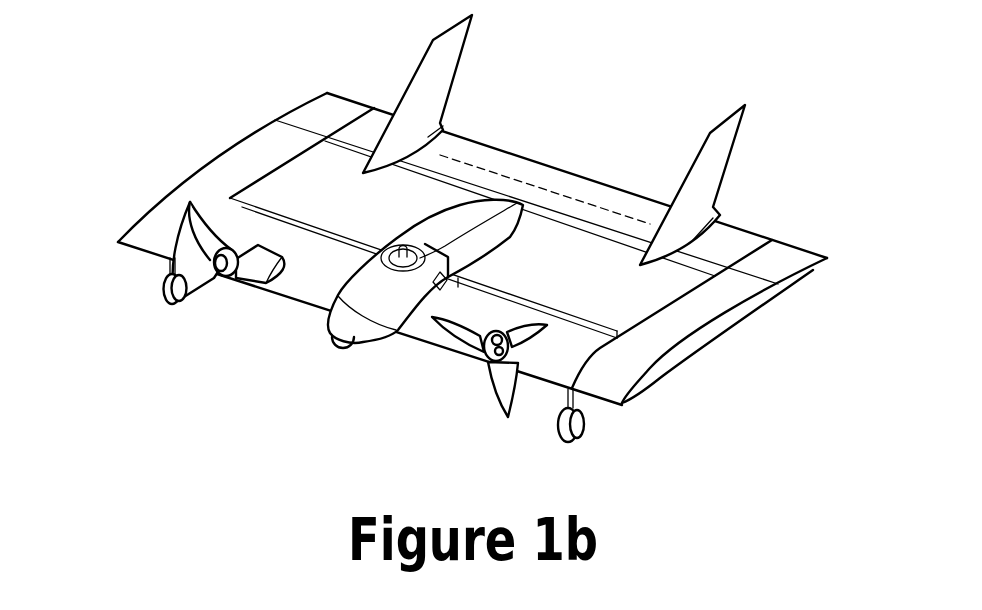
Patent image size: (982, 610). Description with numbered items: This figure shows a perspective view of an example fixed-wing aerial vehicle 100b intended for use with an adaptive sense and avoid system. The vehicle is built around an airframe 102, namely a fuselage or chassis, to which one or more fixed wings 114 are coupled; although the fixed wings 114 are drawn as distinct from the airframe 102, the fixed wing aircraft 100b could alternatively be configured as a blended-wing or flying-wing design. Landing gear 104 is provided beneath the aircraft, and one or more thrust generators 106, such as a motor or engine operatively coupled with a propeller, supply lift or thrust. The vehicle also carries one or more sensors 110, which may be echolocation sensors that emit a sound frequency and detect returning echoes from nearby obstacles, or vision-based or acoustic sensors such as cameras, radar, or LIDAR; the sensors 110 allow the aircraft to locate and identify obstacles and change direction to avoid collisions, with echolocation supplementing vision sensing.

The fixed-wing aerial vehicle 100b is at (836, 54).
The airframe 102 is at (406, 231).
The landing gear 104 is at (171, 305).
The thrust generator 106 is at (222, 279).
The sensor 110 is at (338, 351).
The fixed wing 114 is at (723, 337).